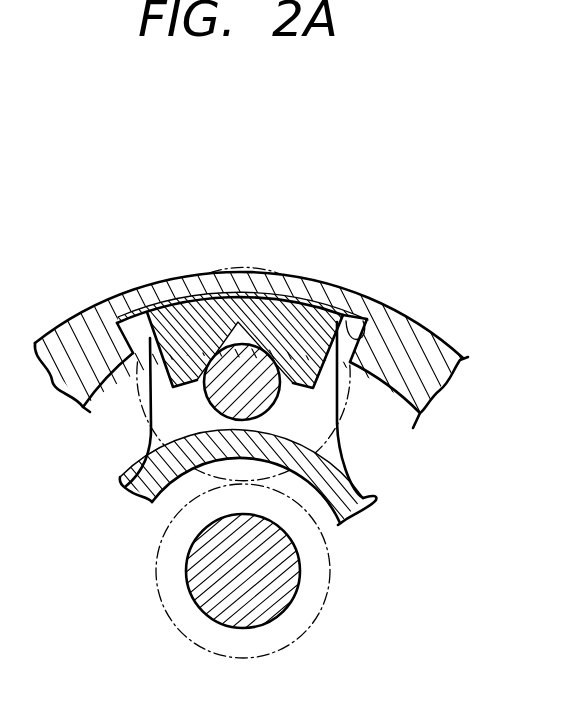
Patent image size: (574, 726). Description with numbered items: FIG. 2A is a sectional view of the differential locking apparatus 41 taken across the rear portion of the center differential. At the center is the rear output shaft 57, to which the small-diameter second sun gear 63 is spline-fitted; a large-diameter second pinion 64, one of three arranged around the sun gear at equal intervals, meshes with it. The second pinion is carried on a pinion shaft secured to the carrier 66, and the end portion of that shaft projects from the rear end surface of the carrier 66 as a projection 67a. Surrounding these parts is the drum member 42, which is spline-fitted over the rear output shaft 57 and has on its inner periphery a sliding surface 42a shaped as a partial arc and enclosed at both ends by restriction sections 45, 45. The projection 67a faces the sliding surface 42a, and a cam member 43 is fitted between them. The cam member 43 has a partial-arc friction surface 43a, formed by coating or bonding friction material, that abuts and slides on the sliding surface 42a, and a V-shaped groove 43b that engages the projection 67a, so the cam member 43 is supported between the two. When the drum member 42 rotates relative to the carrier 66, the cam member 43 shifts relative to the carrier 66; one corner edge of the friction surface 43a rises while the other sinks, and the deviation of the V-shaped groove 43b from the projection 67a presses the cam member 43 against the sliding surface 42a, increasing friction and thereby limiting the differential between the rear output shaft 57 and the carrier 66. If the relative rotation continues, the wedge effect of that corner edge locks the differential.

The differential locking apparatus 41 is at (302, 185).
The drum member 42 is at (430, 360).
The sliding surface 42a is at (352, 328).
The cam member 43 is at (172, 322).
The friction surface 43a is at (295, 296).
The V-shaped groove 43b is at (231, 338).
The restriction sections 45 is at (117, 322).
The rear output shaft 57 is at (300, 598).
The second sun gear 63 is at (331, 556).
The second pinion 64 is at (143, 403).
The carrier 66 is at (362, 497).
The projection 67a is at (199, 335).